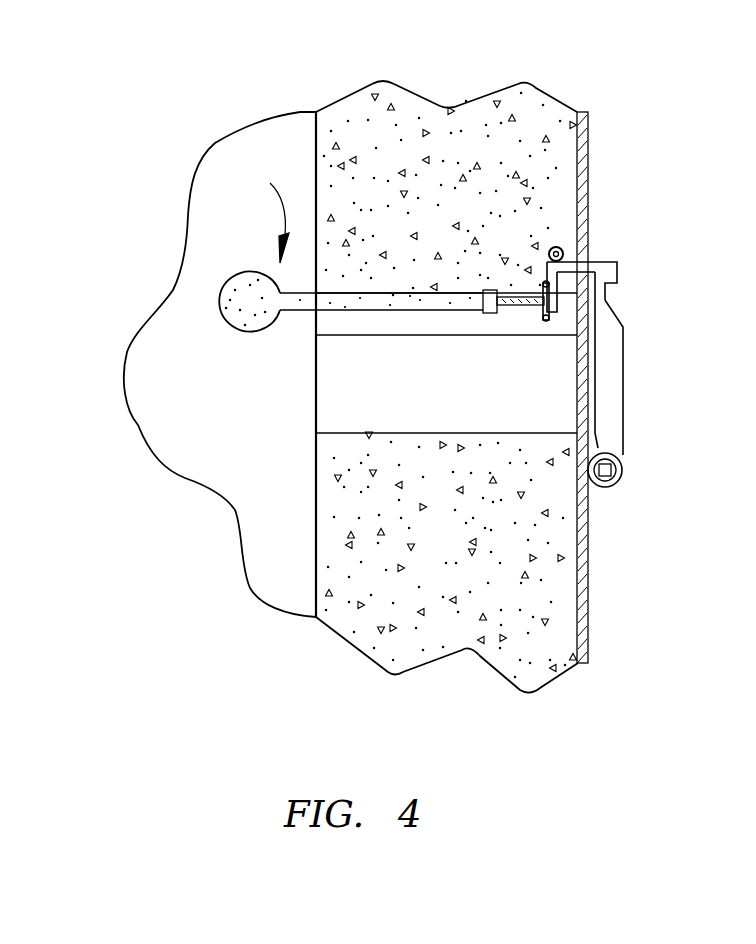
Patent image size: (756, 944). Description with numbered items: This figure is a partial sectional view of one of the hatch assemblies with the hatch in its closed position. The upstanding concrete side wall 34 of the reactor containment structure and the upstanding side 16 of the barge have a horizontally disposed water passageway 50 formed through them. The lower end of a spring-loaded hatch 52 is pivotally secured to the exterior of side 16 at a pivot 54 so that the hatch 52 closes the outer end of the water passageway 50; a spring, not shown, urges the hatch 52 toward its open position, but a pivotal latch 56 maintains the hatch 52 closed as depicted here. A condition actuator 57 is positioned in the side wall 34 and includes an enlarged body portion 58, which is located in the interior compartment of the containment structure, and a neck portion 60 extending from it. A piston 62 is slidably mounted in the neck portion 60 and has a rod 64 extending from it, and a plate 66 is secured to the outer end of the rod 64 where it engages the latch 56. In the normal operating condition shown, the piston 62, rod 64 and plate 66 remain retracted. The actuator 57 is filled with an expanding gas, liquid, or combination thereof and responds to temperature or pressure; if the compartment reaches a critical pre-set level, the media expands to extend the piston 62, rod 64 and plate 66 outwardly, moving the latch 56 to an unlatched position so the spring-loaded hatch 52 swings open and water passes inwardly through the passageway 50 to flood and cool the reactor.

The side 16 is at (590, 128).
The side wall 34 is at (497, 145).
The water passageway 50 is at (444, 407).
The spring-loaded hatch 52 is at (626, 407).
The pivot 54 is at (613, 480).
The pivotal latch 56 is at (618, 265).
The condition actuator 57 is at (262, 216).
The body portion 58 is at (268, 327).
The neck portion 60 is at (411, 305).
The piston 62 is at (495, 292).
The rod 64 is at (513, 297).
The plate 66 is at (538, 312).